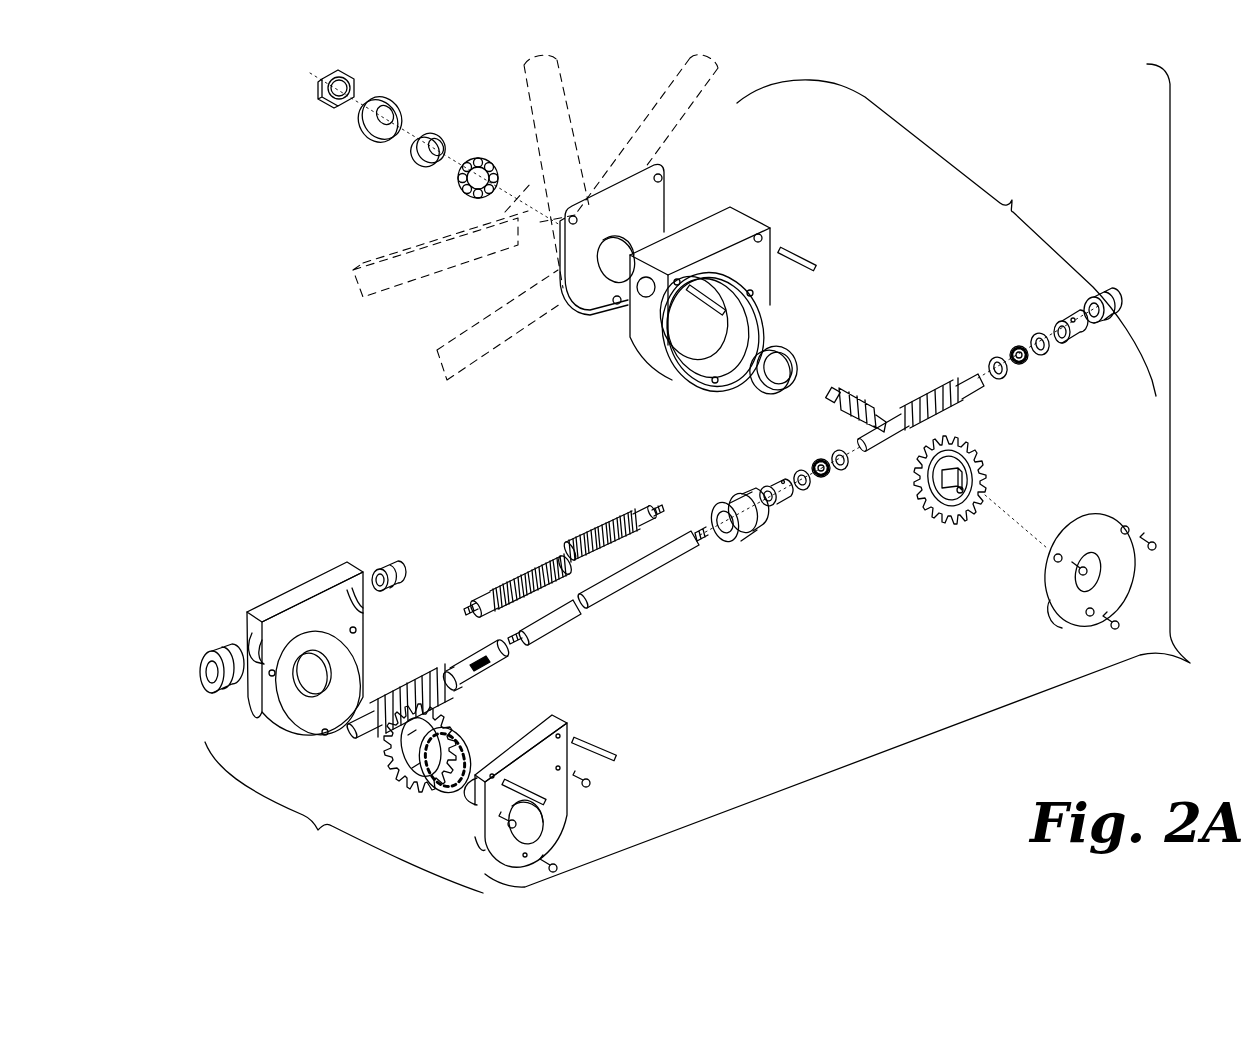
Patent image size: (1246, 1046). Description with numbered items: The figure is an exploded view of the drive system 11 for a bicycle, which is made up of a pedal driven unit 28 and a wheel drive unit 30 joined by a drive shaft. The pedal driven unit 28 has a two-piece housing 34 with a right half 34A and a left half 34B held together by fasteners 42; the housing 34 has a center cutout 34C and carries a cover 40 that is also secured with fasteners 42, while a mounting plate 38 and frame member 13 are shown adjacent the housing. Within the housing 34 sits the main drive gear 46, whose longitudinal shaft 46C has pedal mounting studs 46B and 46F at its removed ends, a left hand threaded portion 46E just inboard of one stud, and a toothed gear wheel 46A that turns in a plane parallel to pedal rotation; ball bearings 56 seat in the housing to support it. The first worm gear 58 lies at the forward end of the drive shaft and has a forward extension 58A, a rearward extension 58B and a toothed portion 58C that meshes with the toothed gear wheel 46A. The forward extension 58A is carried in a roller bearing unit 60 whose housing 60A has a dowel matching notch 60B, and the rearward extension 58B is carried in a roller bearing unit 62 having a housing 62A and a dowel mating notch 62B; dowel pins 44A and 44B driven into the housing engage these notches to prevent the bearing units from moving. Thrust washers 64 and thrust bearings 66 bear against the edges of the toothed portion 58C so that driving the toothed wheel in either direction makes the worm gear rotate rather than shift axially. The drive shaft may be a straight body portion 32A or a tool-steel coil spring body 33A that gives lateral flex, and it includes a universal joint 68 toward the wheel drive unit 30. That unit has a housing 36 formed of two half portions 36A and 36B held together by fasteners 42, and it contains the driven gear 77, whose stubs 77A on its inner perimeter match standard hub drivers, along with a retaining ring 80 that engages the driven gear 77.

The drive system 11 is at (855, 475).
The frame 13 is at (542, 168).
The pedal driven unit 28 is at (946, 238).
The wheel drive unit 30 is at (344, 817).
The body portion of the drive shaft 32A is at (632, 578).
The coil spring drive shaft body 33A is at (548, 557).
The pedal driven unit housing 34 is at (738, 284).
The right half of housing 34A is at (748, 228).
The left half of housing 34B is at (722, 220).
The center cutout 34C is at (740, 318).
The wheel drive unit housing 36 is at (553, 774).
The half portion of wheel drive unit housing 36A is at (570, 803).
The half portion of wheel drive unit housing 36B is at (318, 575).
The mounting plate 38 is at (652, 209).
The cover 40 is at (1045, 603).
The fasteners 42 is at (1103, 627).
The dowel pin 44A is at (800, 260).
The dowel pin 44B is at (693, 292).
The main drive gear 46 is at (938, 448).
The toothed gear wheel 46A is at (955, 435).
The pedal mounting stud 46B is at (962, 498).
The longitudinal shaft 46C is at (912, 445).
The left hand threaded portion 46E is at (857, 406).
The pedal mounting stud 46F is at (833, 390).
The ball bearings 56 is at (458, 195).
The first worm gear 58 is at (920, 380).
The forward extension 58A is at (952, 386).
The rearward extension 58B is at (898, 425).
The toothed portion 58C is at (930, 388).
The roller bearing unit 60 is at (1081, 348).
The roller bearing housing 60A is at (1075, 338).
The dowel matching notch 60B is at (1068, 320).
The roller bearing unit 62 is at (783, 513).
The roller bearing housing 62A is at (768, 505).
The dowel mating notch 62B is at (772, 488).
The thrust washers 64 is at (1038, 336).
The thrust bearings 66 is at (1027, 360).
The universal joint 68 is at (466, 656).
The driven gear 77 is at (416, 740).
The stubs 77A is at (392, 767).
The retaining ring 80 is at (445, 795).